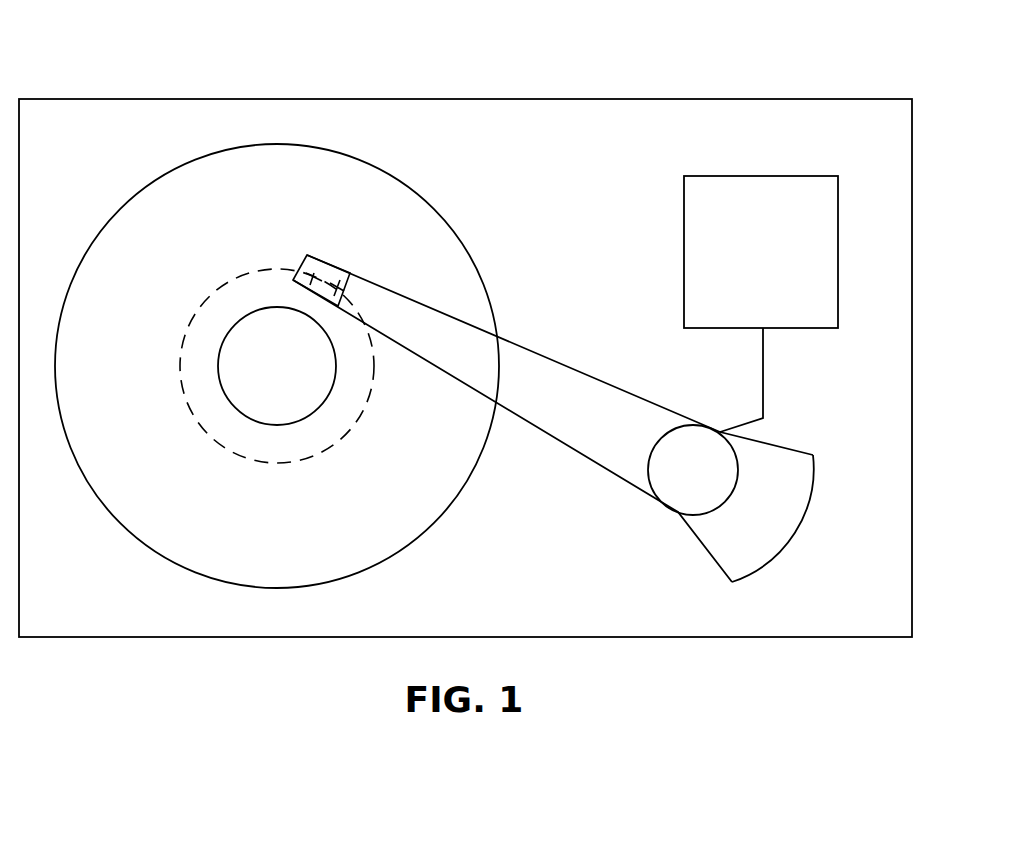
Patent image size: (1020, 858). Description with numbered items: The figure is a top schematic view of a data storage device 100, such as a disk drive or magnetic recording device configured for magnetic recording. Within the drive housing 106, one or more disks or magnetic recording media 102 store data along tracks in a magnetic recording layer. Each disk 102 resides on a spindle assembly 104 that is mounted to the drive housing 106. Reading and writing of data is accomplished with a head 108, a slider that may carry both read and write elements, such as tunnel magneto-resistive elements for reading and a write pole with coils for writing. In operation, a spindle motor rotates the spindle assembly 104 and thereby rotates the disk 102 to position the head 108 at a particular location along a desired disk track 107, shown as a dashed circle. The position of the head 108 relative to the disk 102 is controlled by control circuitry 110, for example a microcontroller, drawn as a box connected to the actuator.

The data storage device 100 is at (172, 56).
The magnetic recording medium 102 is at (433, 205).
The spindle assembly 104 is at (253, 372).
The drive housing 106 is at (565, 99).
The disk track 107 is at (222, 287).
The head 108 is at (333, 270).
The control circuitry 110 is at (730, 269).